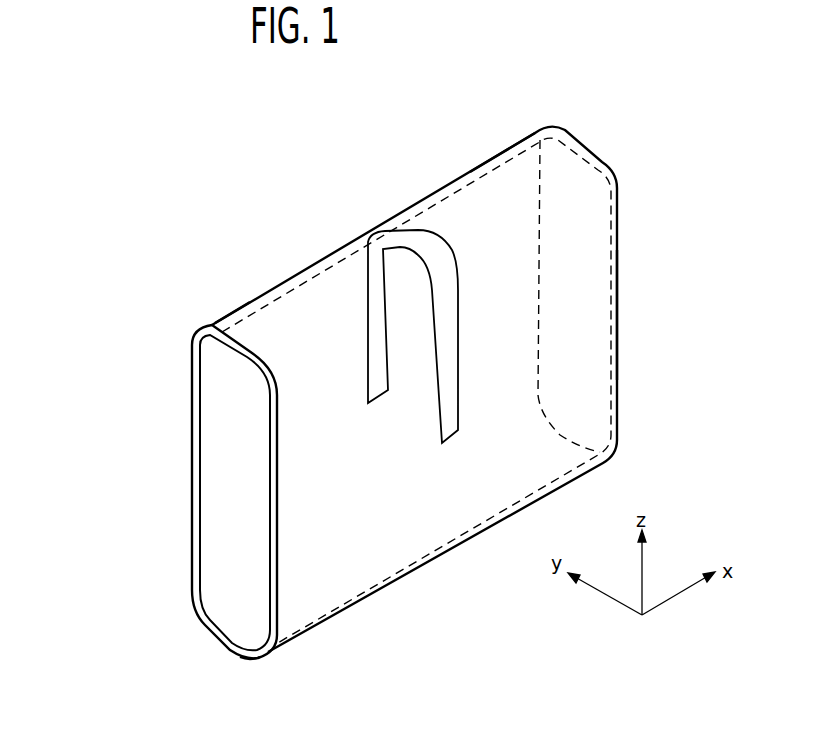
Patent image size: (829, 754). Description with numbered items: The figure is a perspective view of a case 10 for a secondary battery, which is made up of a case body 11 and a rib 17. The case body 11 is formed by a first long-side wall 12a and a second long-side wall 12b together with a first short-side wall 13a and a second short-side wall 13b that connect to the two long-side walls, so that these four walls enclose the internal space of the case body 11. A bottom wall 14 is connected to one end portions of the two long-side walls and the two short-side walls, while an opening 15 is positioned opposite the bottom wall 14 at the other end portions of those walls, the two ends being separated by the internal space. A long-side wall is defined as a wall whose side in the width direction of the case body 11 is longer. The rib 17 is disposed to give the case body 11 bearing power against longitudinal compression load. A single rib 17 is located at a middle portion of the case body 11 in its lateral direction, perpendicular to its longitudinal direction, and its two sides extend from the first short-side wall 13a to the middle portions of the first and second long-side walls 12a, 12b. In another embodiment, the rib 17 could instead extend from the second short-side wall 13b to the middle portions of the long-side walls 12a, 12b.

The case for secondary battery 10 is at (117, 222).
The case body 11 is at (512, 143).
The first long-side wall 12a is at (193, 490).
The second long-side wall 12b is at (300, 503).
The first short-side wall 13a is at (232, 320).
The second short-side wall 13b is at (225, 645).
The bottom wall 14 is at (618, 313).
The opening 15 is at (223, 412).
The rib 17 is at (413, 243).